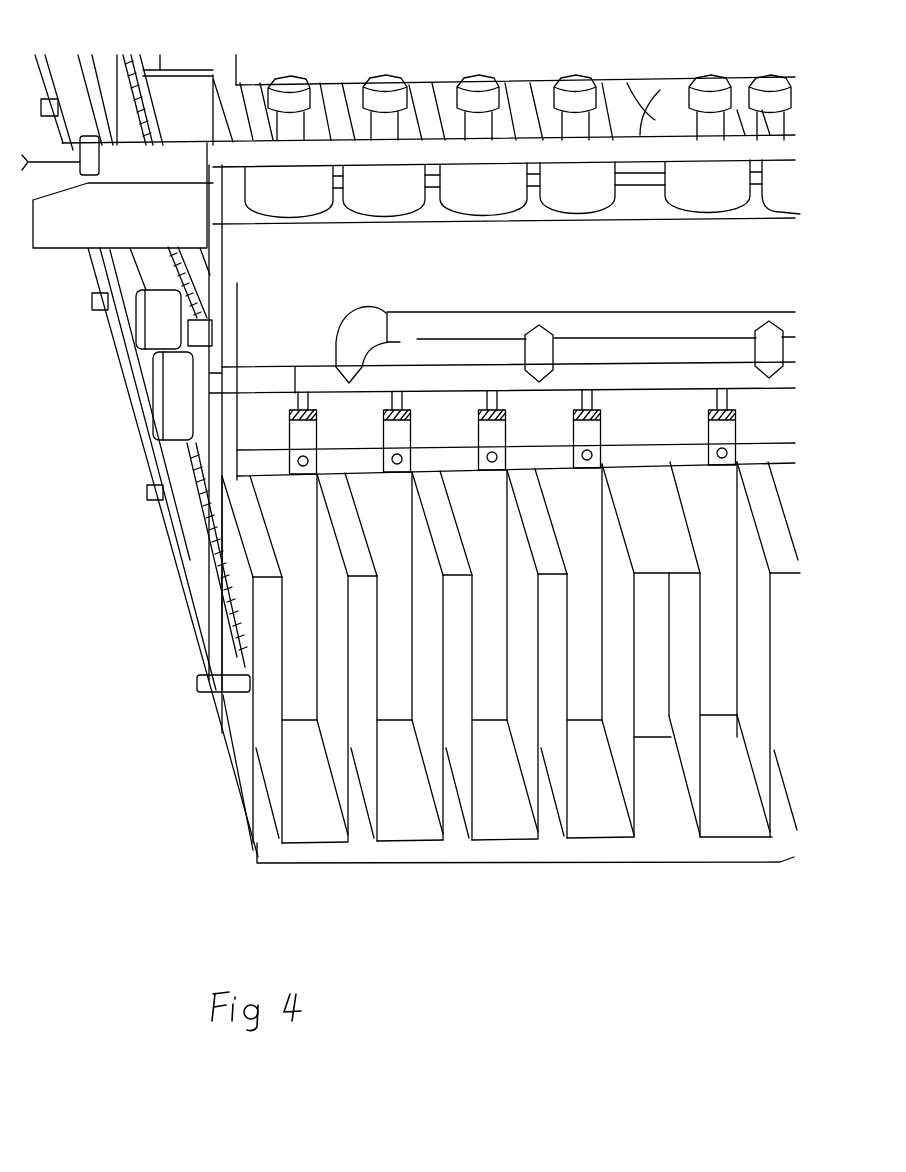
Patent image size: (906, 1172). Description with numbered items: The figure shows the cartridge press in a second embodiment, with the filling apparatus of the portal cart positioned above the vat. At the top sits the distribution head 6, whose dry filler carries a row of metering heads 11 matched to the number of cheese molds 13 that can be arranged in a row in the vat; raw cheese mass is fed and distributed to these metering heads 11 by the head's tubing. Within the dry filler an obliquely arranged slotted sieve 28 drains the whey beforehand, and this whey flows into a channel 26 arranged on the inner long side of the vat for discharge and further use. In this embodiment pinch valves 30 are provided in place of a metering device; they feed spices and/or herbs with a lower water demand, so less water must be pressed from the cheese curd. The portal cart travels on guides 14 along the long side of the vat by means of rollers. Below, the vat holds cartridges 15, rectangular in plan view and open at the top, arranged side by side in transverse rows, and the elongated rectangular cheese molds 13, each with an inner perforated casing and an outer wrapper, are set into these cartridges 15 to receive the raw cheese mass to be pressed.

The distribution head 6 is at (548, 52).
The metering heads 11 is at (482, 207).
The slotted sieve 28 is at (518, 310).
The pinch valves 30 is at (707, 425).
The guides 14 is at (160, 458).
The channel 26 is at (228, 652).
The cheese molds 13 is at (313, 828).
The cartridges 15 is at (462, 845).